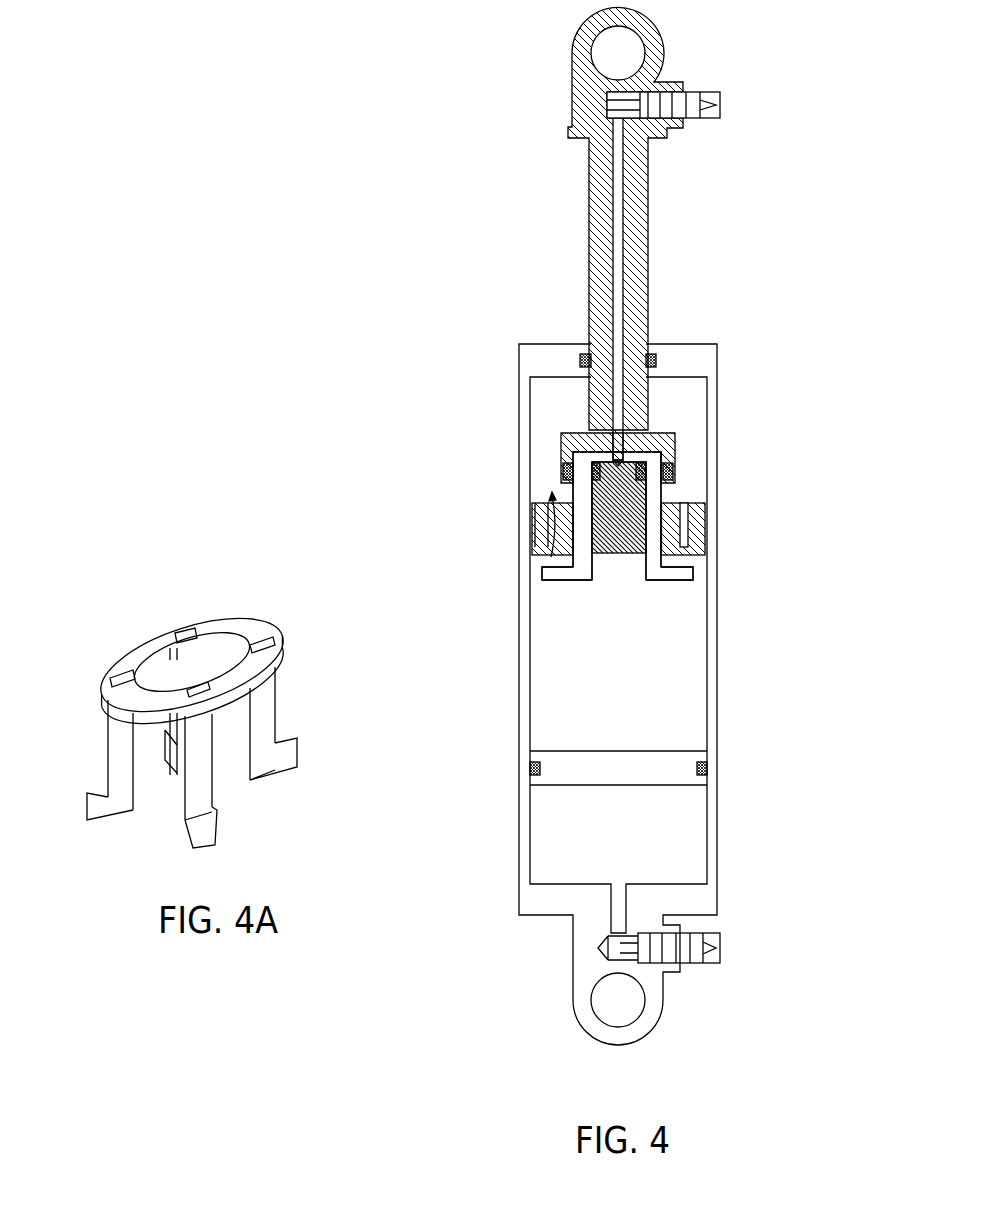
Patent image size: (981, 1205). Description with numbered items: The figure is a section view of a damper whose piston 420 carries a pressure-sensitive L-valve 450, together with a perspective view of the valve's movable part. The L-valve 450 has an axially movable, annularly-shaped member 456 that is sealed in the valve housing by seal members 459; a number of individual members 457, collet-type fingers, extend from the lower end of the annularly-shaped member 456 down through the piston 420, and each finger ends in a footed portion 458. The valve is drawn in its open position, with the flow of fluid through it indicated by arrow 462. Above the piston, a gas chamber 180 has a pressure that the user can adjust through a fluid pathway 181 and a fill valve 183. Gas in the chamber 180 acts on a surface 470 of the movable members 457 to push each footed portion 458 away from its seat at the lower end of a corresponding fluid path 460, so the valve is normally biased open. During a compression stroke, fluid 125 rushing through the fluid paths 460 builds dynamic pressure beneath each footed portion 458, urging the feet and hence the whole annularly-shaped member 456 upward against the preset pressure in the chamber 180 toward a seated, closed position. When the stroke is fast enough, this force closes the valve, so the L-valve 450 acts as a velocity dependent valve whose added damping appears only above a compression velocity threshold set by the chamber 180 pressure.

In FIG. 4, the fluid 125 is at (638, 700).
In FIG. 4, the chamber 180 is at (657, 457).
In FIG. 4, the fluid pathway 181 is at (625, 206).
In FIG. 4, the fill valve 183 is at (694, 92).
In FIG. 4, the piston 420 is at (698, 520).
In FIG. 4, the L-valve 450 is at (694, 462).
In FIG. 4, the annularly-shaped member 456 is at (566, 488).
In FIG. 4A, the annularly-shaped member 456 is at (186, 632).
In FIG. 4, the individual members 457 is at (650, 493).
In FIG. 4A, the individual members 457 is at (125, 752).
In FIG. 4, the footed portion 458 is at (557, 573).
In FIG. 4A, the footed portion 458 is at (108, 808).
In FIG. 4, the seal members 459 is at (566, 463).
In FIG. 4, the fluid path 460 is at (684, 538).
In FIG. 4, the arrow 462 is at (547, 528).
In FIG. 4, the surface 470 is at (563, 430).